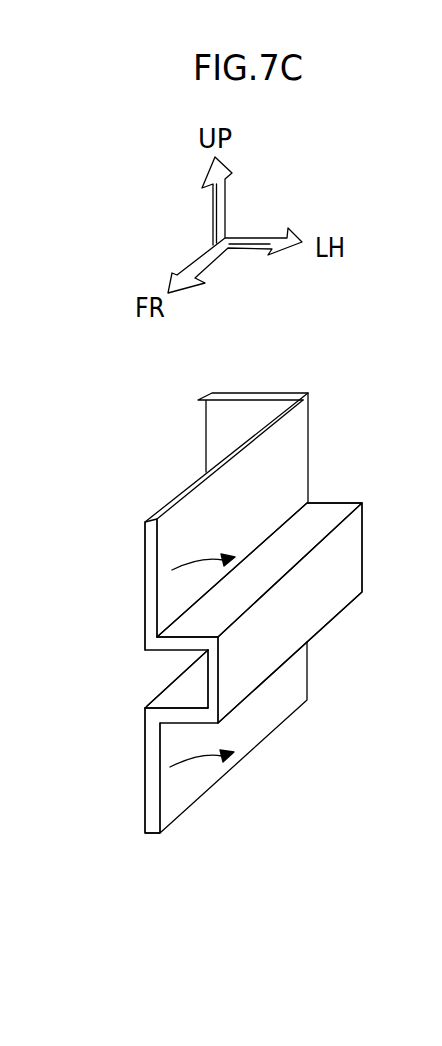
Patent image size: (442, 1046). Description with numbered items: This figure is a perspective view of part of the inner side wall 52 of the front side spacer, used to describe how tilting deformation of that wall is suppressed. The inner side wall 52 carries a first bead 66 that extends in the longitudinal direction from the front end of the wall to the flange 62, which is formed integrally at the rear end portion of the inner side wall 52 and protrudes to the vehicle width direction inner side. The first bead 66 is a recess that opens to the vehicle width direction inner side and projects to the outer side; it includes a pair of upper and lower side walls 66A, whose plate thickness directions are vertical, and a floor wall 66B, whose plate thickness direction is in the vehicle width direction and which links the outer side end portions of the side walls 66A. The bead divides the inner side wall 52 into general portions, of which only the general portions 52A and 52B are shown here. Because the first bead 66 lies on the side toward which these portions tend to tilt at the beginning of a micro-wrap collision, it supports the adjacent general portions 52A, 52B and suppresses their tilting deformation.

The inner side wall 52 is at (170, 494).
The general portion 52A is at (152, 588).
The general portion 52B is at (153, 783).
The flange 62 is at (240, 418).
The first bead 66 is at (367, 552).
The side wall 66A is at (332, 512).
The floor wall 66B is at (340, 590).